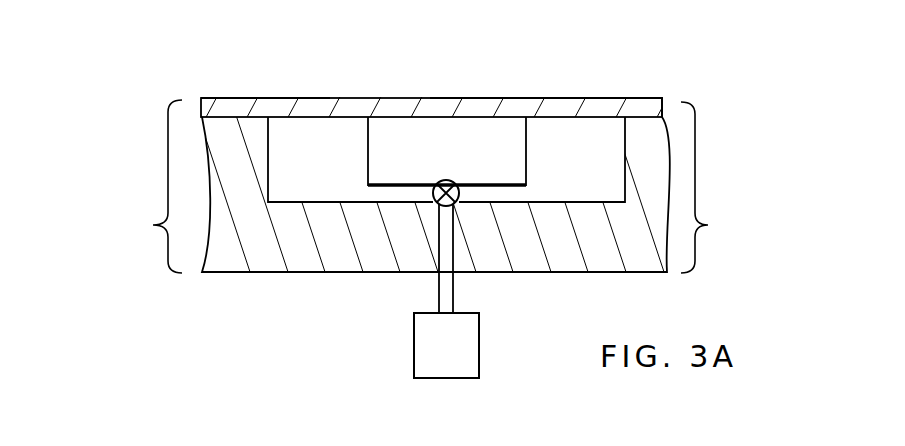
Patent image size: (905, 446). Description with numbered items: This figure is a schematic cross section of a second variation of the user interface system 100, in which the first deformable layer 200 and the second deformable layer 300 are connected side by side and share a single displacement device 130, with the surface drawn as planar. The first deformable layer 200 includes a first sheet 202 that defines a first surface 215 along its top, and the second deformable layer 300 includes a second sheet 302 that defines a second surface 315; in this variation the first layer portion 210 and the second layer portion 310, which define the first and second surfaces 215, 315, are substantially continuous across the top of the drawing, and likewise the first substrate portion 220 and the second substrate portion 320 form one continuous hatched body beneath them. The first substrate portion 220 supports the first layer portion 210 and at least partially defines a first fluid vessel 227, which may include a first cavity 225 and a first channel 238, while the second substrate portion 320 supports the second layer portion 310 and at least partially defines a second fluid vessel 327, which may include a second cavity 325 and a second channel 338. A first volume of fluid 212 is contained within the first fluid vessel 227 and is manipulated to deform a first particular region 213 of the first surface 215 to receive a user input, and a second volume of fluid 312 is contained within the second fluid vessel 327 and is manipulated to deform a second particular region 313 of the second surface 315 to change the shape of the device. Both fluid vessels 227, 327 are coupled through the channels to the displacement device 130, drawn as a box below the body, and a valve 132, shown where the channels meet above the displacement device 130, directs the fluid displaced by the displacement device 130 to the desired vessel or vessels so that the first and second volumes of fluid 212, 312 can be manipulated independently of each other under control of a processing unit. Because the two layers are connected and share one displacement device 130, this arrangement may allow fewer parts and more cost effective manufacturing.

The user interface system 100 is at (170, 329).
The displacement device 130 is at (411, 347).
The valve 132 is at (446, 179).
The first deformable layer 200 is at (170, 62).
The first sheet 202 is at (147, 186).
The first layer portion 210 is at (215, 108).
The first volume of fluid 212 is at (333, 131).
The first particular region 213 is at (302, 93).
The first surface 215 is at (222, 93).
The first substrate portion 220 is at (295, 246).
The first cavity 225 is at (345, 165).
The first fluid vessel 227 is at (313, 188).
The first channel 238 is at (430, 208).
The second deformable layer 300 is at (701, 54).
The second sheet 302 is at (717, 187).
The second layer portion 310 is at (651, 110).
The second volume of fluid 312 is at (543, 136).
The second particular region 313 is at (594, 94).
The second surface 315 is at (578, 93).
The second substrate portion 320 is at (628, 251).
The second cavity 325 is at (597, 165).
The second fluid vessel 327 is at (576, 191).
The second channel 338 is at (463, 208).